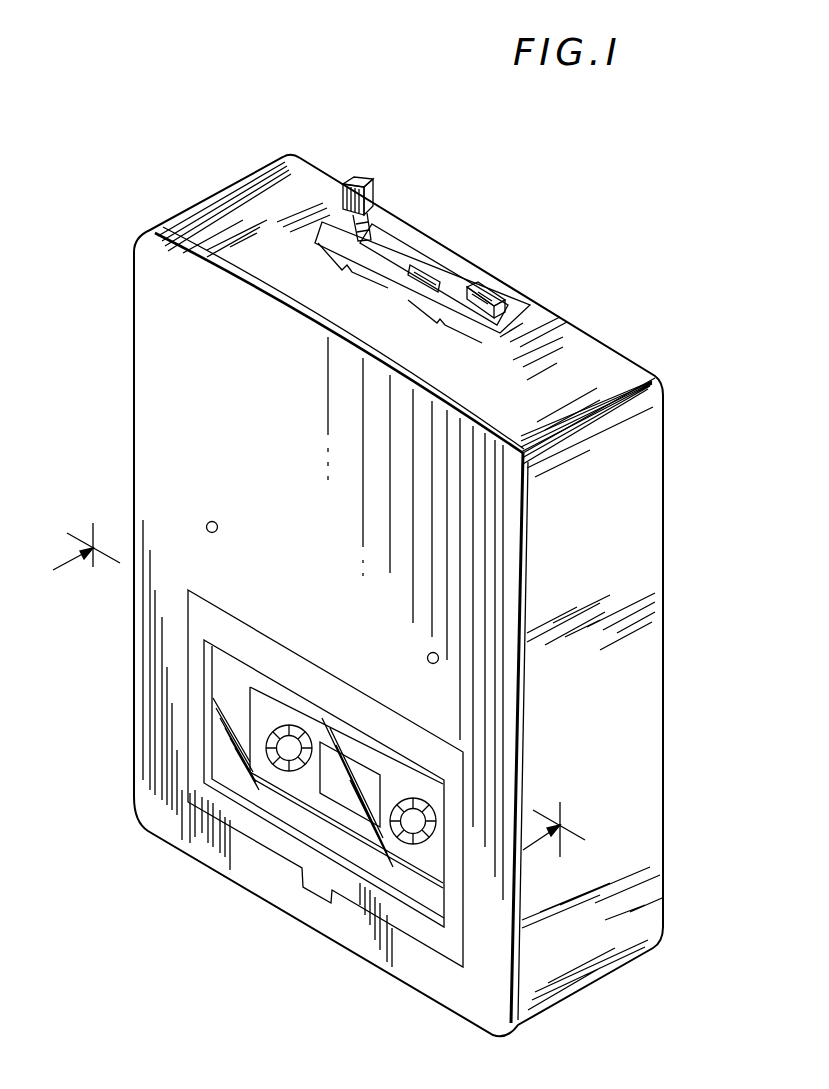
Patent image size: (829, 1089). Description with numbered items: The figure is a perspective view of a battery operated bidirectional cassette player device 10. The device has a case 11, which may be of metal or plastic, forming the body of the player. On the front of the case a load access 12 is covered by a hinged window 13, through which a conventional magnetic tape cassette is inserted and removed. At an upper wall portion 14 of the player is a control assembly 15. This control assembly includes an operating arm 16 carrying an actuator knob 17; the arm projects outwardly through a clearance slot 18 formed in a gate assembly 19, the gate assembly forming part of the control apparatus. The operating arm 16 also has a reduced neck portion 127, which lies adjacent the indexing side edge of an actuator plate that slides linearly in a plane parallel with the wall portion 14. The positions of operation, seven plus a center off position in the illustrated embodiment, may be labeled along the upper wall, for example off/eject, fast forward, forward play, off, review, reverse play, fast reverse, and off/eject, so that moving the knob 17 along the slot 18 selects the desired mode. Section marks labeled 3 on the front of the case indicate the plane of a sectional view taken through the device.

The cassette player device 10 is at (676, 555).
The case 11 is at (664, 742).
The load access 12 is at (187, 777).
The hinged window 13 is at (238, 740).
The upper wall portion 14 is at (340, 226).
The control assembly 15 is at (447, 292).
The operating arm 16 is at (340, 229).
The actuator knob 17 is at (373, 181).
The clearance slot 18 is at (400, 262).
The gate assembly 19 is at (461, 277).
The reduced neck portion 127 is at (372, 216).
The section line 3- 3 is at (316, 701).